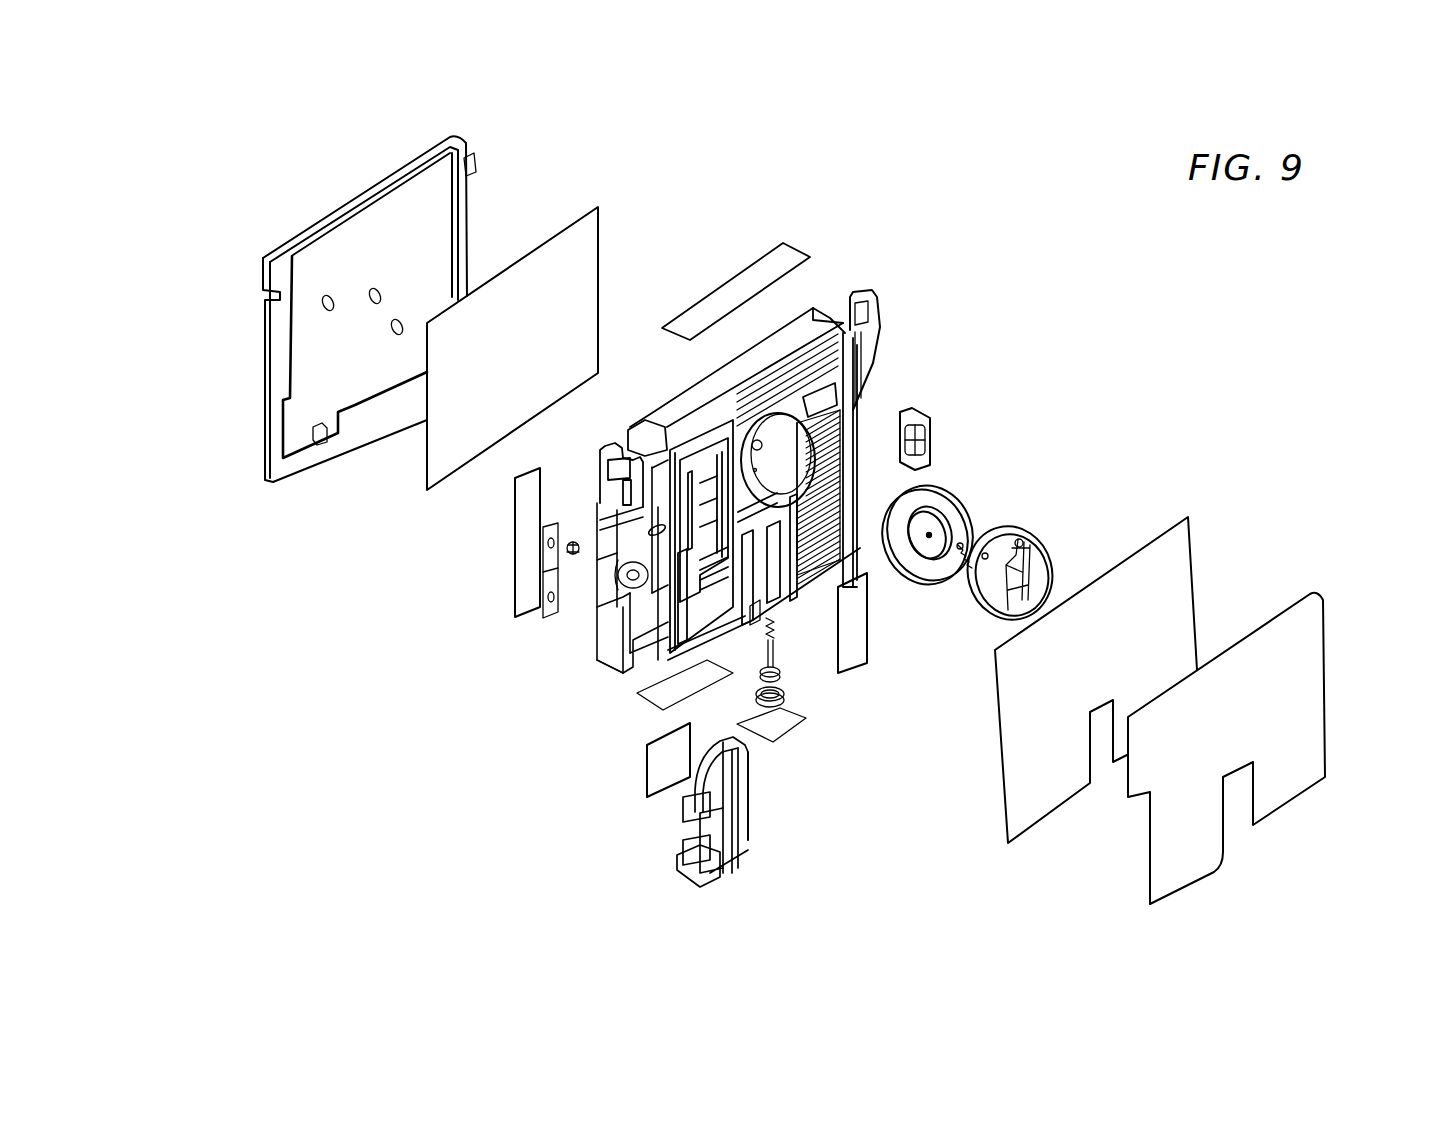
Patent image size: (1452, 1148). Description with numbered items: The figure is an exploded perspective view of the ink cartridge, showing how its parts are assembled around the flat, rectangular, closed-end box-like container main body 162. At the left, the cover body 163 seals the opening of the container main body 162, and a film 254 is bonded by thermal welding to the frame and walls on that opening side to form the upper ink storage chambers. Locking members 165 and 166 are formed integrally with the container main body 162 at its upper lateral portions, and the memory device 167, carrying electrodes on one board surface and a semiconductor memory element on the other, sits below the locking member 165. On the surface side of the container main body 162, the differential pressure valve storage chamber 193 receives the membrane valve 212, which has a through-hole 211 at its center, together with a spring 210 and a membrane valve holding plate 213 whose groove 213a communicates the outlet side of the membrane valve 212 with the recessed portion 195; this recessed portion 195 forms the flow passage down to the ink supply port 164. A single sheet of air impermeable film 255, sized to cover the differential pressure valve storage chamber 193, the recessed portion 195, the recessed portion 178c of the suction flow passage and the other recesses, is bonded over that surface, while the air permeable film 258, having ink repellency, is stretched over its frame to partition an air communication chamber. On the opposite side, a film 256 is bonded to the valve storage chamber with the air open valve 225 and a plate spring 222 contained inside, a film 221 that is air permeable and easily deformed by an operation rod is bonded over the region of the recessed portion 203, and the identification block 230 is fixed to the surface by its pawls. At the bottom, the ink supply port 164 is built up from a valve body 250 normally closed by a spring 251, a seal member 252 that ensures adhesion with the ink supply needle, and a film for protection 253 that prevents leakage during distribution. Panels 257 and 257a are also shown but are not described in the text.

The container main body 162 is at (808, 317).
The cover body 163 is at (277, 438).
The ink supply port 164 is at (777, 607).
The locking member 165 is at (873, 298).
The locking member 166 is at (603, 445).
The memory device 167 is at (928, 430).
The recessed portion 178c is at (623, 670).
The differential pressure valve storage chamber 193 is at (798, 440).
The recessed portion 195 is at (840, 497).
The recessed portion 203 is at (615, 590).
The spring 210 is at (970, 540).
The through-hole 211 is at (929, 540).
The membrane valve 212 is at (975, 474).
The membrane valve holding plate 213 is at (1048, 560).
The groove 213a is at (1003, 603).
The film 221 is at (650, 767).
The plate spring 222 is at (535, 622).
The air open valve 225 is at (577, 537).
The identification block 230 is at (745, 845).
The valve body 250 is at (785, 673).
The spring 251 is at (775, 630).
The seal member 252 is at (785, 697).
The film for protection 253 is at (790, 720).
The film 254 is at (598, 233).
The air impermeable film 255 is at (1182, 570).
The film 256 is at (517, 552).
The cover panel 257 is at (1317, 637).
The tab portion 257a is at (1126, 892).
The air permeable film 258 is at (863, 637).